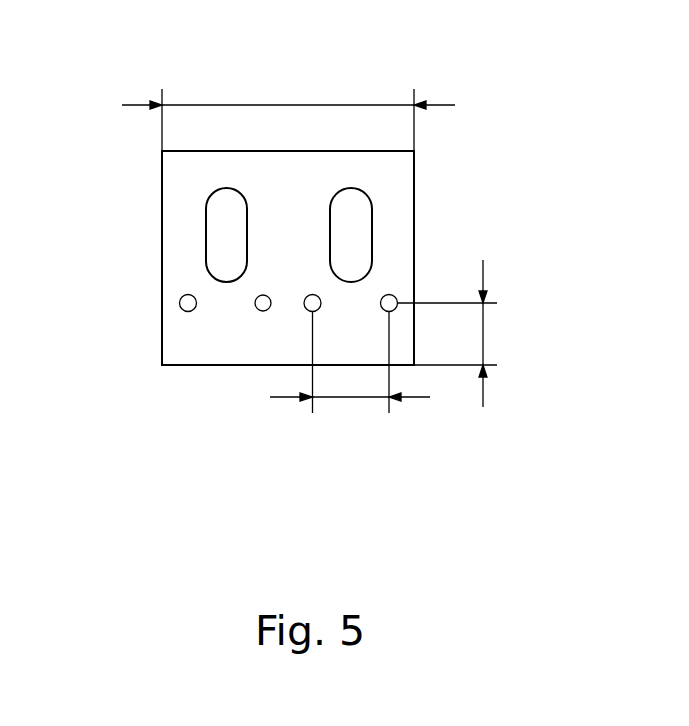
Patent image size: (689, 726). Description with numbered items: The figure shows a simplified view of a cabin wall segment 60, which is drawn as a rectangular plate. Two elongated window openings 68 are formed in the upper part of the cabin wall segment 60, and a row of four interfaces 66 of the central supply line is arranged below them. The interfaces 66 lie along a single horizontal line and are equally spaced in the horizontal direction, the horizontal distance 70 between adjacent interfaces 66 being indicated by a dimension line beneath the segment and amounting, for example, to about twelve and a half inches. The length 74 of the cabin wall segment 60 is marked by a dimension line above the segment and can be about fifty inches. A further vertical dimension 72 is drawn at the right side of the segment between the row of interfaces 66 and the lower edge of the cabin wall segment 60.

The cabin wall segment 60 is at (108, 130).
The interfaces of the central supply line 66 is at (190, 312).
The window openings 68 is at (350, 228).
The horizontal distance 70 is at (352, 403).
The hole height dimension 72 is at (484, 330).
The length of the cabin wall segment 74 is at (445, 105).